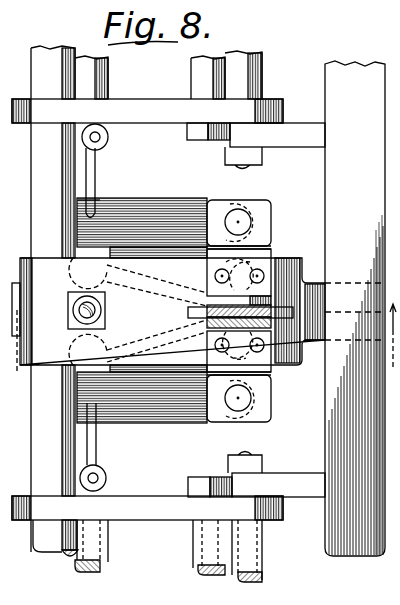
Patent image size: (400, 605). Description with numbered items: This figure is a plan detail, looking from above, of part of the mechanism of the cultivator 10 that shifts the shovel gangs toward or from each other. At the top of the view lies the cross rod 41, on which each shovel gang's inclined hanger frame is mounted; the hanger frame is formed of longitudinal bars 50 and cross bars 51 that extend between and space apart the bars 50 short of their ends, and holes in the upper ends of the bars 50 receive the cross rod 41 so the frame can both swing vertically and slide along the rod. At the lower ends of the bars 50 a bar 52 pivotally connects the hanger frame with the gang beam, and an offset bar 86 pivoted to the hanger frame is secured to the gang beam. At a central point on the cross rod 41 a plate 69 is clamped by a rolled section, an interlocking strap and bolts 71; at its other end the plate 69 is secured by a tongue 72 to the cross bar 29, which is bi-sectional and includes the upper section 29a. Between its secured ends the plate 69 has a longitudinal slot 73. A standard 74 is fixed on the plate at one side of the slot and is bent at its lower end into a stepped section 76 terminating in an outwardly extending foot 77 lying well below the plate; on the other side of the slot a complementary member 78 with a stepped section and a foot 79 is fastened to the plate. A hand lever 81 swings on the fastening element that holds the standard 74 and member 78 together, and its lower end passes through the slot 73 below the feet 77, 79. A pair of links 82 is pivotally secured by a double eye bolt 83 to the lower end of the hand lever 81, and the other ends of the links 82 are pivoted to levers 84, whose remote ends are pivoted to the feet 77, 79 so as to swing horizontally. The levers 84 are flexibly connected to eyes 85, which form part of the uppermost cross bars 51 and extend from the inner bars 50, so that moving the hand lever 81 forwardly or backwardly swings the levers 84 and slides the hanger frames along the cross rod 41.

The frame / machine direction reference 10 is at (204, 343).
The cross bar 29 is at (355, 64).
The upper section of cross bar 29a is at (355, 277).
The cross rod 41 is at (54, 560).
The longitudinal bars 50 is at (176, 115).
The cross bars 51 is at (110, 80).
The bar 52 is at (262, 76).
The plate 69 is at (172, 311).
The bolts 71 is at (80, 310).
The tongue 72 is at (322, 286).
The longitudinal slot 73 is at (193, 318).
The standard 74 is at (265, 318).
The stepped section 76 is at (239, 353).
The foot 77 is at (272, 406).
The complementary member 78 is at (262, 262).
The foot 79 is at (272, 208).
The hand lever 81 is at (208, 306).
The links 82 is at (102, 311).
The double eye bolt 83 is at (239, 269).
The levers 84 is at (165, 206).
The eyes 85 is at (108, 142).
The offset bar 86 is at (306, 137).